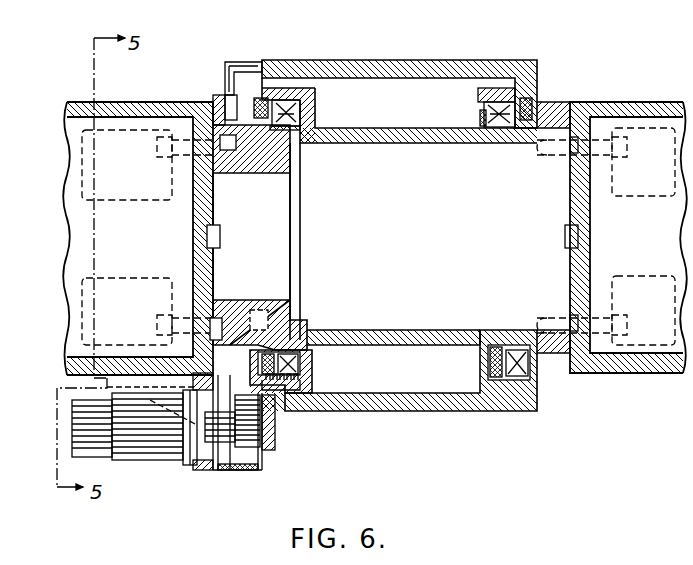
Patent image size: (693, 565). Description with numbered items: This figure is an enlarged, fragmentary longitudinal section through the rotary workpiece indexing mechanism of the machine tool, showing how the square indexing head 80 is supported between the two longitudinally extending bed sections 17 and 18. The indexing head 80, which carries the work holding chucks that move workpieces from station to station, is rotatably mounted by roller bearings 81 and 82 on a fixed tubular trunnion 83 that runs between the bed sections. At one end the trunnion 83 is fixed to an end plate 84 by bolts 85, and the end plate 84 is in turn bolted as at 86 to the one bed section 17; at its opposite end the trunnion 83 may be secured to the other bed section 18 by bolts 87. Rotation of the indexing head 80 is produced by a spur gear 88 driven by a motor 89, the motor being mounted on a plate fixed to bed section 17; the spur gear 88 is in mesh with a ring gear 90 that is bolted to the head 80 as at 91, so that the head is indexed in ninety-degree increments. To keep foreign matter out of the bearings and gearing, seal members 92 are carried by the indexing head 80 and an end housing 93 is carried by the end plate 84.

The bed section 17 is at (148, 103).
The bed section 18 is at (612, 217).
The indexing head 80 is at (468, 412).
The roller bearing 81 is at (292, 100).
The roller bearing 82 is at (495, 102).
The tubular trunnion 83 is at (392, 128).
The end plate 84 is at (272, 308).
The bolts 85 is at (256, 150).
The bolts 86 is at (218, 300).
The bolts 87 is at (605, 318).
The spur gear 88 is at (268, 435).
The motor 89 is at (152, 455).
The ring gear 90 is at (246, 440).
The bolts 91 is at (272, 405).
The seal members 92 is at (262, 100).
The end housing 93 is at (238, 64).